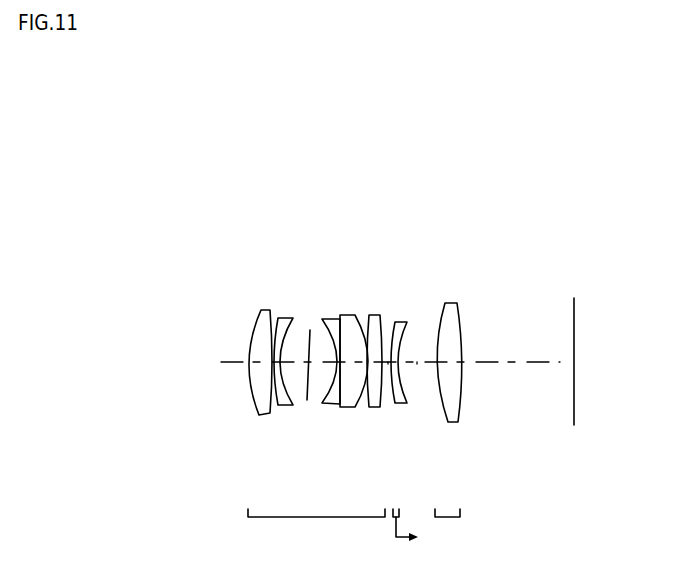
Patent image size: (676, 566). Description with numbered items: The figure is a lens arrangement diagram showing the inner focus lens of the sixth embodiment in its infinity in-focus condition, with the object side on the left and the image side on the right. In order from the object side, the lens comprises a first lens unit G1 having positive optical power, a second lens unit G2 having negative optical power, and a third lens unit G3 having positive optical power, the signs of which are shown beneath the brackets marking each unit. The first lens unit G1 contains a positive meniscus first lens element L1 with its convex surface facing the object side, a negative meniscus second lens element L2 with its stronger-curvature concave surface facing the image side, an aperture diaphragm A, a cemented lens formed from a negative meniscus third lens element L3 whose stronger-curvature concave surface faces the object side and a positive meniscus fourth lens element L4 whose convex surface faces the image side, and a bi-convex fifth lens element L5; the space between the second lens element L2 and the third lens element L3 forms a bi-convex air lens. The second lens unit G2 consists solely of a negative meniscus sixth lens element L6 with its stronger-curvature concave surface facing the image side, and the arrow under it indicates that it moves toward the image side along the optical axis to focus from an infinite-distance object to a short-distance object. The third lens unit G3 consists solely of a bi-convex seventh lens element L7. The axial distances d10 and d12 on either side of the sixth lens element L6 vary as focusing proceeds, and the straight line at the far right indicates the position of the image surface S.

The first lens element L1 is at (267, 310).
The second lens element L2 is at (280, 318).
The aperture diaphragm A is at (310, 330).
The third lens element L3 is at (330, 320).
The fourth lens element L4 is at (348, 316).
The fifth lens element L5 is at (377, 316).
The sixth lens element L6 is at (402, 323).
The seventh lens element L7 is at (452, 303).
The axial distance d10 is at (388, 364).
The axial distance d12 is at (417, 363).
The image surface S is at (574, 333).
The first lens unit G1 is at (316, 502).
The second lens unit G2 is at (396, 514).
The third lens unit G3 is at (450, 502).